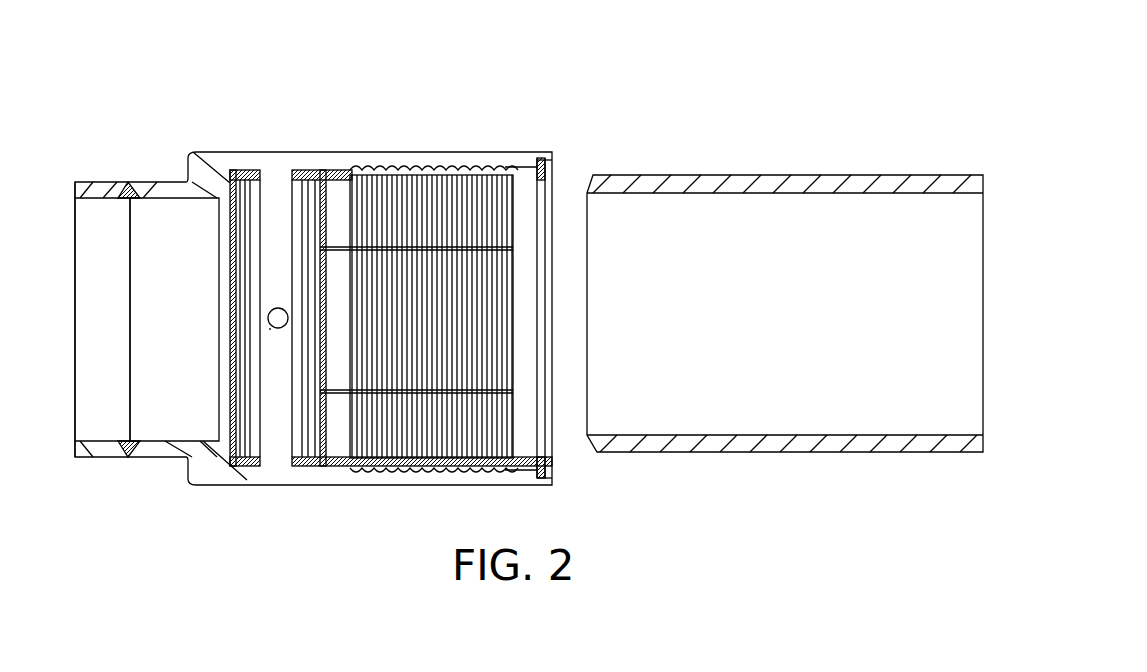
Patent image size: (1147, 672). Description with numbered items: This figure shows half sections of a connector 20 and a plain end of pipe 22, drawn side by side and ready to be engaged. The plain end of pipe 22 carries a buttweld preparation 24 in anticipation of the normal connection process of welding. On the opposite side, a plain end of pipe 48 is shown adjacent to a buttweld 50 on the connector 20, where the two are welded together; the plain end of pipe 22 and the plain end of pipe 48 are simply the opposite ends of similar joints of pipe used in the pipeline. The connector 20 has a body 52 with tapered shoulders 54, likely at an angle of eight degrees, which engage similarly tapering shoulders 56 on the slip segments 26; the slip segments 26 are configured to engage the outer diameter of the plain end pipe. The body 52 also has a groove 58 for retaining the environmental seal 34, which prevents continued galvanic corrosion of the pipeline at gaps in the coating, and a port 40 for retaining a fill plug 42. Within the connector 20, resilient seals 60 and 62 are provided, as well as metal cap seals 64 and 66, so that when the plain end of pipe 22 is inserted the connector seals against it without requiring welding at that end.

The connector 20 is at (365, 80).
The plain end of pipe 22 is at (700, 170).
The buttweld preparation 24 is at (593, 183).
The slip segments 26 is at (470, 165).
The environmental seal 34 is at (545, 466).
The fill port 40 is at (276, 328).
The fill plug 42 is at (281, 328).
The plain end of pipe 48 is at (98, 182).
The buttweld 50 is at (160, 180).
The body 52 is at (522, 165).
The tapered shoulders 54 is at (396, 165).
The tapering shoulders 56 is at (430, 165).
The groove 58 is at (548, 485).
The resilient seal 60 is at (303, 170).
The resilient seal 62 is at (250, 172).
The metal cap seal 64 is at (320, 170).
The metal cap seal 66 is at (236, 172).